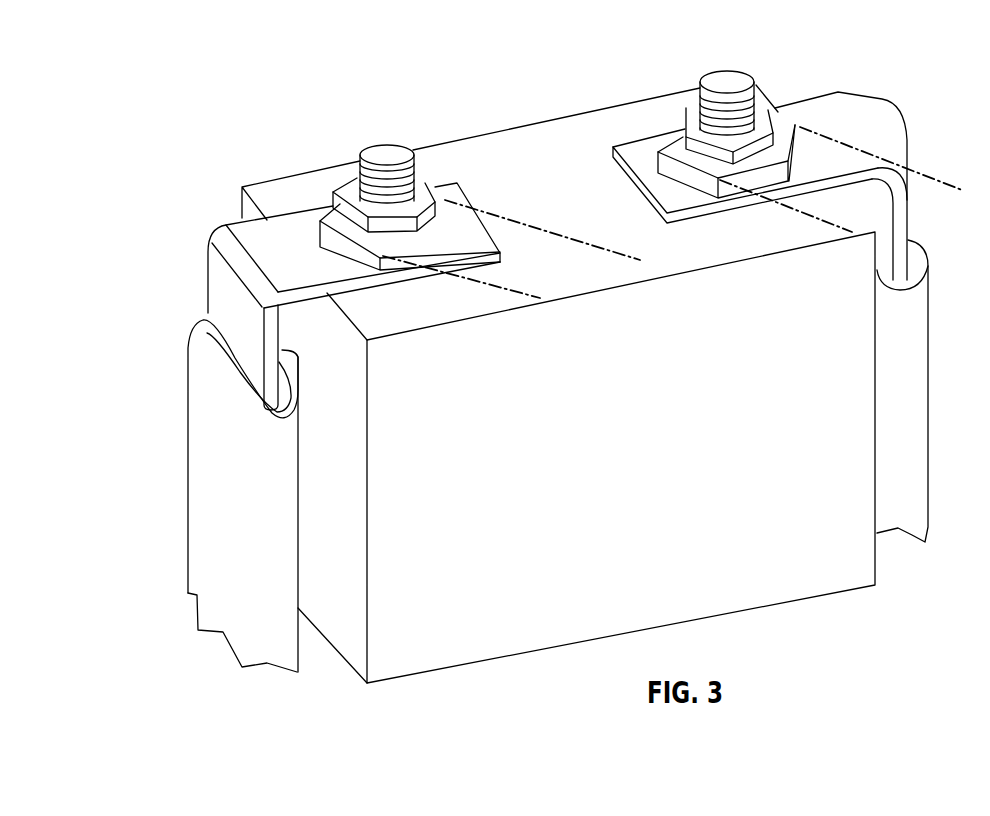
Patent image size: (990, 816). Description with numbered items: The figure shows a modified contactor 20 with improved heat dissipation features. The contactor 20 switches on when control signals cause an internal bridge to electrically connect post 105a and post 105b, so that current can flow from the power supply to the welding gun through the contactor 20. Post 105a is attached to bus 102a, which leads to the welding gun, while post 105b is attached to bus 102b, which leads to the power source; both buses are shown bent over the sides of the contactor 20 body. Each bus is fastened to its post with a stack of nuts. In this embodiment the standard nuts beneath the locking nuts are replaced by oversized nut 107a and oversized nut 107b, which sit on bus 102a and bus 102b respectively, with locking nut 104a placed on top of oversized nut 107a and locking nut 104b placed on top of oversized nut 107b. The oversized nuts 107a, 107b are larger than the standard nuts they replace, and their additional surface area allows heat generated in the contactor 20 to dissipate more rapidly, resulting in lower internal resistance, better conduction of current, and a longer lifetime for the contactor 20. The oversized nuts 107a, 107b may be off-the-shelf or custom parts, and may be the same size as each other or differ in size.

The contactor 20 is at (850, 436).
The bus 102a is at (250, 234).
The bus 102b is at (847, 137).
The locking nut 104a is at (423, 192).
The locking nut 104b is at (768, 106).
The post 105a is at (382, 152).
The post 105b is at (720, 83).
The oversized nut 107a is at (447, 198).
The oversized nut 107b is at (778, 126).